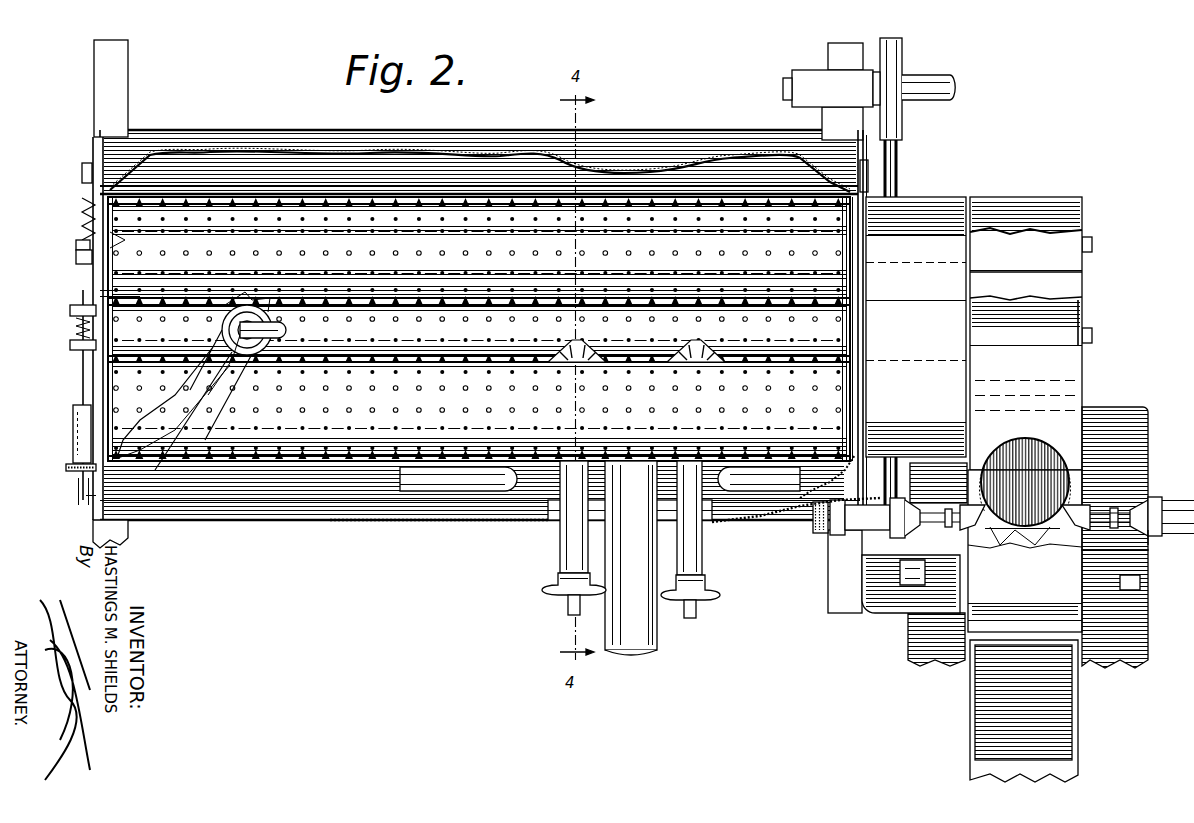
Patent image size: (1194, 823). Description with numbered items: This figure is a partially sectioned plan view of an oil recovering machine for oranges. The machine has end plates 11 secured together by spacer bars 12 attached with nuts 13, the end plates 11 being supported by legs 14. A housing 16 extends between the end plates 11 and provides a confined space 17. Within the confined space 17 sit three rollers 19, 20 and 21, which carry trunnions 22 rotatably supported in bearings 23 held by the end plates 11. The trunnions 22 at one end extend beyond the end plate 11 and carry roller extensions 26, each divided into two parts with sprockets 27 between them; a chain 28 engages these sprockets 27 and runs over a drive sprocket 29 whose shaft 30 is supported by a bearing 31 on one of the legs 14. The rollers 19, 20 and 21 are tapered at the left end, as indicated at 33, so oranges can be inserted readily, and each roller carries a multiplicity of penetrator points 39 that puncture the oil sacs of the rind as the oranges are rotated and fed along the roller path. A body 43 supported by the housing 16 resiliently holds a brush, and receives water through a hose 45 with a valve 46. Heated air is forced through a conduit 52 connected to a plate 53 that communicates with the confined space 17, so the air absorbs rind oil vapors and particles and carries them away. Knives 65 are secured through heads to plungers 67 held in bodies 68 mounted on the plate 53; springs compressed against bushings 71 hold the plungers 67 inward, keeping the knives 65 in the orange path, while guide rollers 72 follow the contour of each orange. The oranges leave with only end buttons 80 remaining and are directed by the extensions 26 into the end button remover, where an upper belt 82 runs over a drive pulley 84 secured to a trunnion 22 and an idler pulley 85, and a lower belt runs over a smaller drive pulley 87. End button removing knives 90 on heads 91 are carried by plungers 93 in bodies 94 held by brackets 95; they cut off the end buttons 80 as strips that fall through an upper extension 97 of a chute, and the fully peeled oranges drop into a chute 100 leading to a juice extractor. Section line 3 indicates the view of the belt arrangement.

The section line 3 is at (1176, 364).
The end plates 11 is at (98, 190).
The spacer bars 12 is at (405, 172).
The nuts 13 is at (82, 172).
The legs 14 is at (118, 112).
The housing 16 is at (630, 140).
The confined space 17 is at (308, 189).
The roller 19 is at (806, 244).
The roller 20 is at (806, 404).
The roller 21 is at (801, 329).
The trunnions 22 is at (80, 258).
The bearings 23 is at (78, 250).
The roller extensions 26 is at (950, 200).
The sprockets 27 is at (898, 412).
The chain 28 is at (895, 118).
The drive sprocket 29 is at (895, 58).
The shaft 30 is at (928, 82).
The bearing 31 is at (813, 80).
The tapered end 33 is at (140, 243).
The penetrator points 39 is at (505, 204).
The body 43 is at (195, 381).
The hose 45 is at (245, 348).
The valve 46 is at (232, 370).
The conduit 52 is at (655, 625).
The plate 53 is at (552, 522).
The knives 65 is at (580, 345).
The plungers 67 is at (696, 612).
The bodies 68 is at (700, 552).
The bushings 71 is at (706, 592).
The guide rollers 72 is at (584, 350).
The end buttons 80 is at (1070, 446).
The upper belt 82 is at (1057, 222).
The drive pulley 84 is at (1083, 272).
The idler pulley 85 is at (1150, 532).
The drive pulley 87 is at (1085, 312).
The end button removing knives 90 is at (1010, 540).
The heads 91 is at (1120, 505).
The plungers 93 is at (920, 522).
The bodies 94 is at (830, 555).
The brackets 95 is at (1138, 582).
The upper extension 97 is at (1110, 415).
The chute 100 is at (1062, 708).